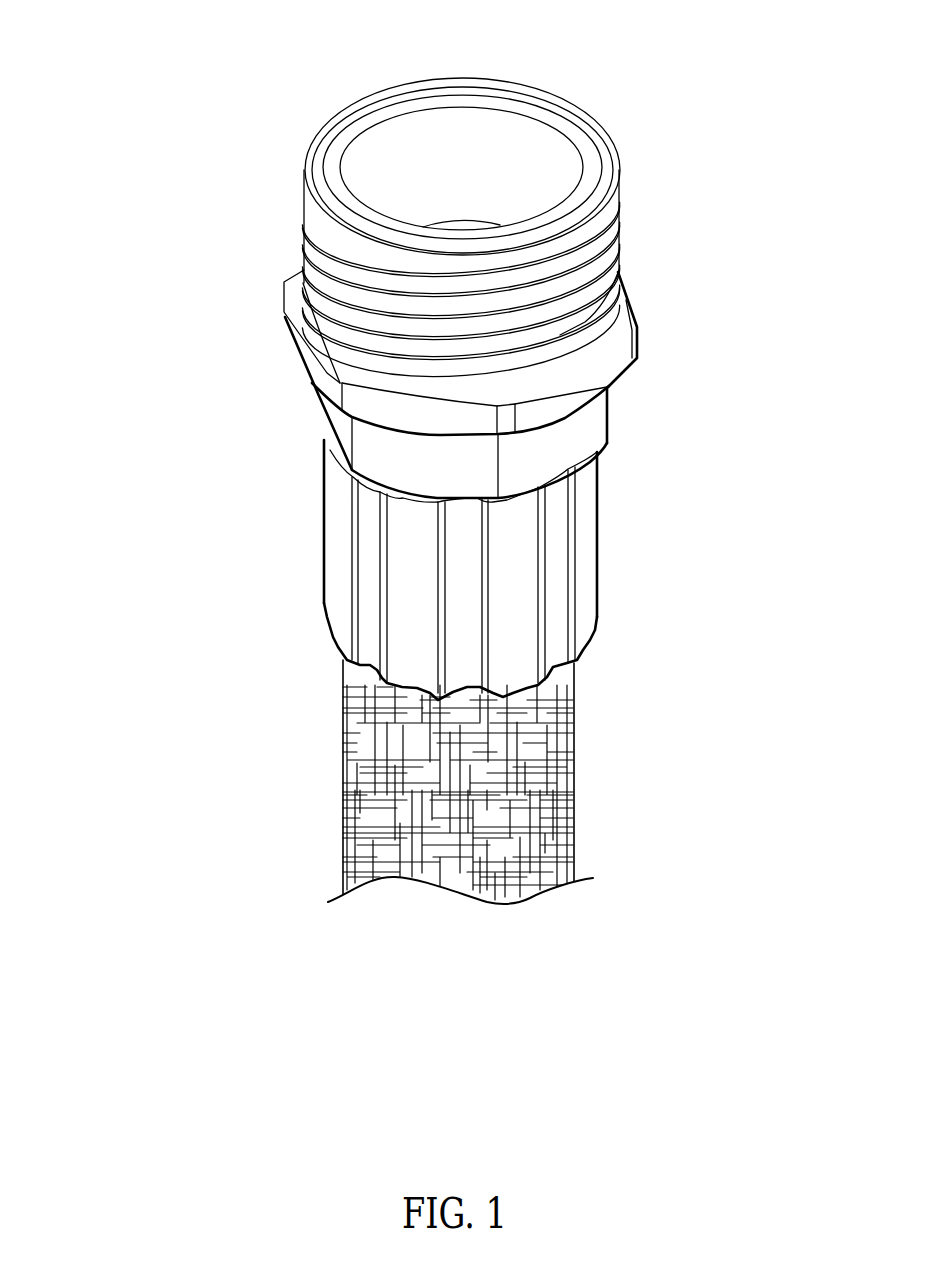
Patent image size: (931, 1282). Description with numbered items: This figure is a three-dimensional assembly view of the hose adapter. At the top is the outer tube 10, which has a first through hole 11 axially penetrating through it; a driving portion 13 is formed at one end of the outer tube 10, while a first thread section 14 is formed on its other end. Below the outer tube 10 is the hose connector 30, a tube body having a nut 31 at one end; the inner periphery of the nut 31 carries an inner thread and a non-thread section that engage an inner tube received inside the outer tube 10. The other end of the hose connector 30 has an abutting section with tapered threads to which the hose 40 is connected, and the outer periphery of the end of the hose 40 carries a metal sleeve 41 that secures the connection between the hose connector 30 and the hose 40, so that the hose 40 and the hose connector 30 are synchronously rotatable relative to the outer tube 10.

The outer tube 10 is at (435, 226).
The first through hole 11 is at (528, 155).
The driving portion 13 is at (302, 351).
The first thread section 14 is at (608, 240).
The hose connector 30 is at (447, 508).
The nut 31 is at (578, 437).
The hose 40 is at (585, 778).
The metal sleeve 41 is at (578, 597).